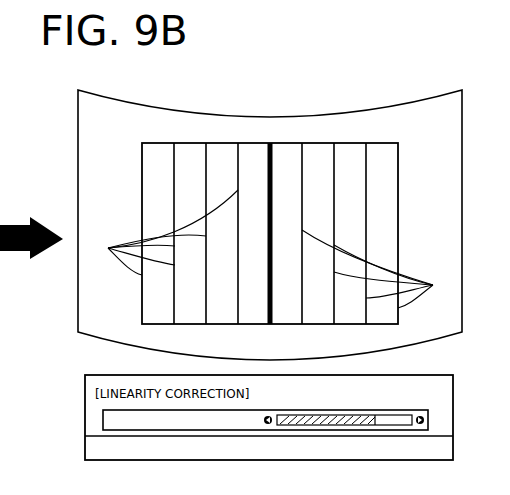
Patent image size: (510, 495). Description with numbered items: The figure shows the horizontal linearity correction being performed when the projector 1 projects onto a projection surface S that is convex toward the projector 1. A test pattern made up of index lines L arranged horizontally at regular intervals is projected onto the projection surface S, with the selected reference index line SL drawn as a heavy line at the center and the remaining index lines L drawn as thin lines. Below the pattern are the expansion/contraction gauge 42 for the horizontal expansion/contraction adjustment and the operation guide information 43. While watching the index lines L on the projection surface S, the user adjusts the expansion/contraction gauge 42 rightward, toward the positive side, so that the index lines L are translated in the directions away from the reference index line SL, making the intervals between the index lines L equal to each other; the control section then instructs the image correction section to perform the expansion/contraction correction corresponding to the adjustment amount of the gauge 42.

The projection surface S is at (395, 104).
The projector 1 is at (130, 178).
The reference index line SL is at (266, 158).
The index lines L is at (271, 249).
The expansion/contraction gauge 42 is at (72, 404).
The operation guide information 43 is at (72, 441).